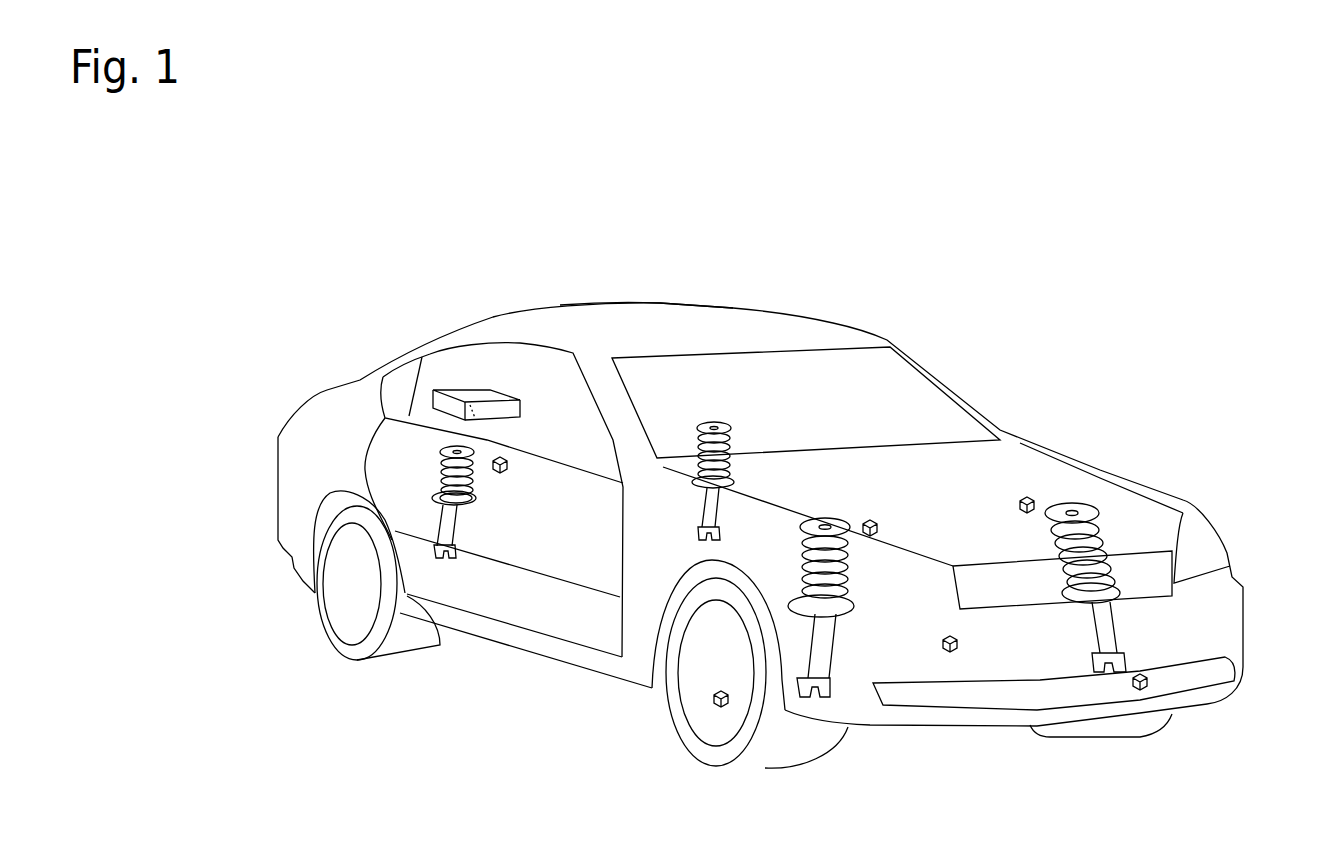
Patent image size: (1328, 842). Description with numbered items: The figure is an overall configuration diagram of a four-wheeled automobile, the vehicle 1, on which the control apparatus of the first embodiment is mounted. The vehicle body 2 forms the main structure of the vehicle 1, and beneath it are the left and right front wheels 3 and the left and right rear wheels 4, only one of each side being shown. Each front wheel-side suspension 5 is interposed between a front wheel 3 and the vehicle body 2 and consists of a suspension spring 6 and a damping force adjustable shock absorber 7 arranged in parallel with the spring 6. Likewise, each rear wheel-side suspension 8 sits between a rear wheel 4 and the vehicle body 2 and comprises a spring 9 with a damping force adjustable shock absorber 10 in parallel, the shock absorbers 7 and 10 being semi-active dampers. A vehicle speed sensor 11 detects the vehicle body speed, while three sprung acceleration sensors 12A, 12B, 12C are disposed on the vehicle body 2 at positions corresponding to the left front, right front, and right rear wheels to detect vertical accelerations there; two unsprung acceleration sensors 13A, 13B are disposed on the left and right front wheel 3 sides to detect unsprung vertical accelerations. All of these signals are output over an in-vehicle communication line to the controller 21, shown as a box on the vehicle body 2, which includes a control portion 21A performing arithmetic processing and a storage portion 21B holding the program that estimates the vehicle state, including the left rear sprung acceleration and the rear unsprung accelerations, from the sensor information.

The vehicle 1 is at (760, 482).
The vehicle body 2 is at (649, 330).
The front wheel 3 is at (793, 743).
The rear wheel 4 is at (398, 620).
The front wheel-side suspension 5 is at (1030, 653).
The suspension spring 6 is at (847, 540).
The damping force adjustable shock absorber 7 is at (828, 690).
The rear wheel-side suspension 8 is at (519, 473).
The suspension spring 9 is at (433, 473).
The damping force adjustable shock absorber 10 is at (458, 510).
The vehicle speed sensor 11 is at (952, 655).
The left front sprung acceleration sensor 12A is at (1037, 502).
The right front sprung acceleration sensor 12B is at (877, 525).
The right rear sprung acceleration sensor 12C is at (507, 463).
The left front unsprung acceleration sensor 13A is at (1226, 660).
The right front unsprung acceleration sensor 13B is at (716, 710).
The controller 21 is at (474, 323).
The control portion 21A is at (472, 392).
The storage portion 21B is at (489, 408).